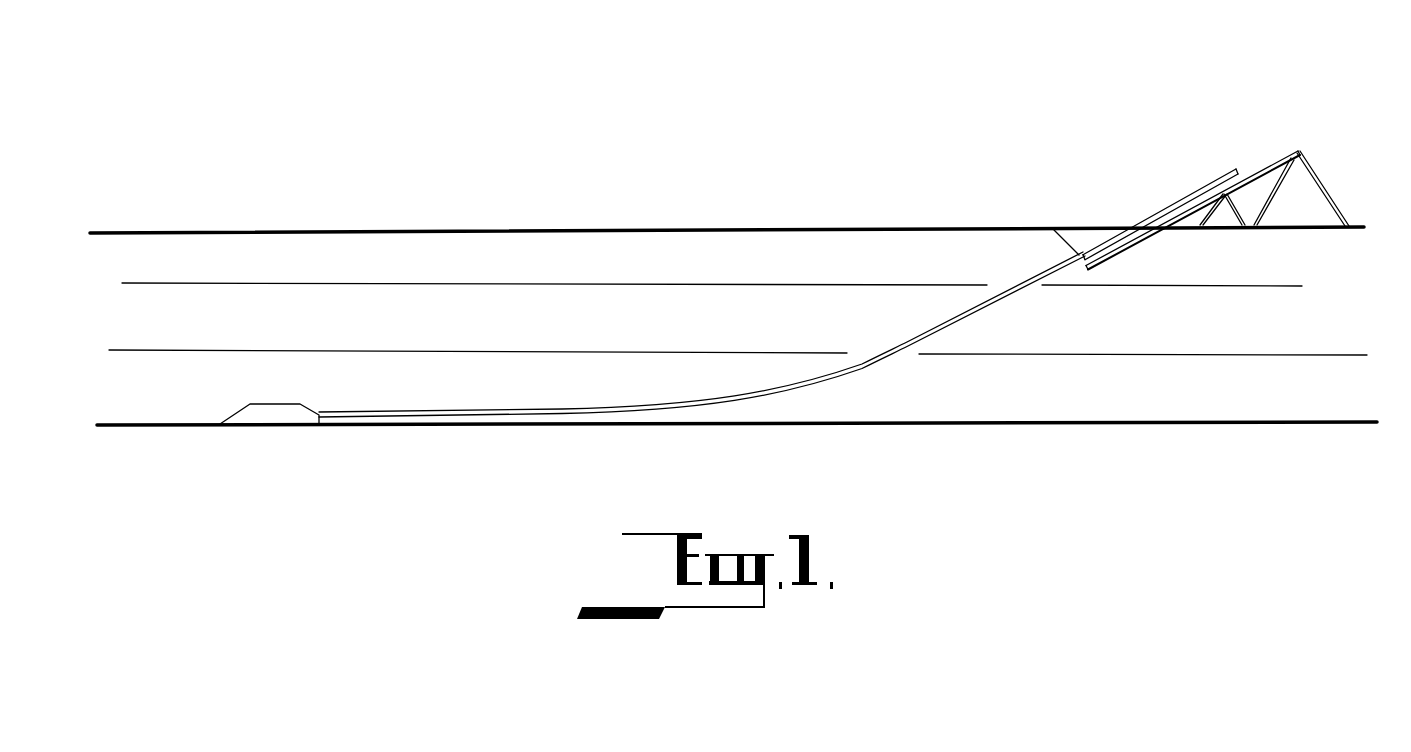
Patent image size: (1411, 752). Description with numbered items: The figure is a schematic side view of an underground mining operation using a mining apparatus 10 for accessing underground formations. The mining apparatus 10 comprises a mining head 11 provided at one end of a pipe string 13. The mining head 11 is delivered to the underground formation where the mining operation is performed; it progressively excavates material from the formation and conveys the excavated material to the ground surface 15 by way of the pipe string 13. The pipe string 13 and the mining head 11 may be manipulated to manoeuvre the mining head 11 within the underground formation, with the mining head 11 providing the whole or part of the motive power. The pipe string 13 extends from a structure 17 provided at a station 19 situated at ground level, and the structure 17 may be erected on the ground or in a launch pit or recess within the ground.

The mining apparatus 10 is at (1140, 202).
The mining head 11 is at (287, 411).
The pipe string 13 is at (932, 323).
The ground surface 15 is at (1028, 227).
The structure 17 is at (1283, 183).
The station 19 is at (1260, 158).